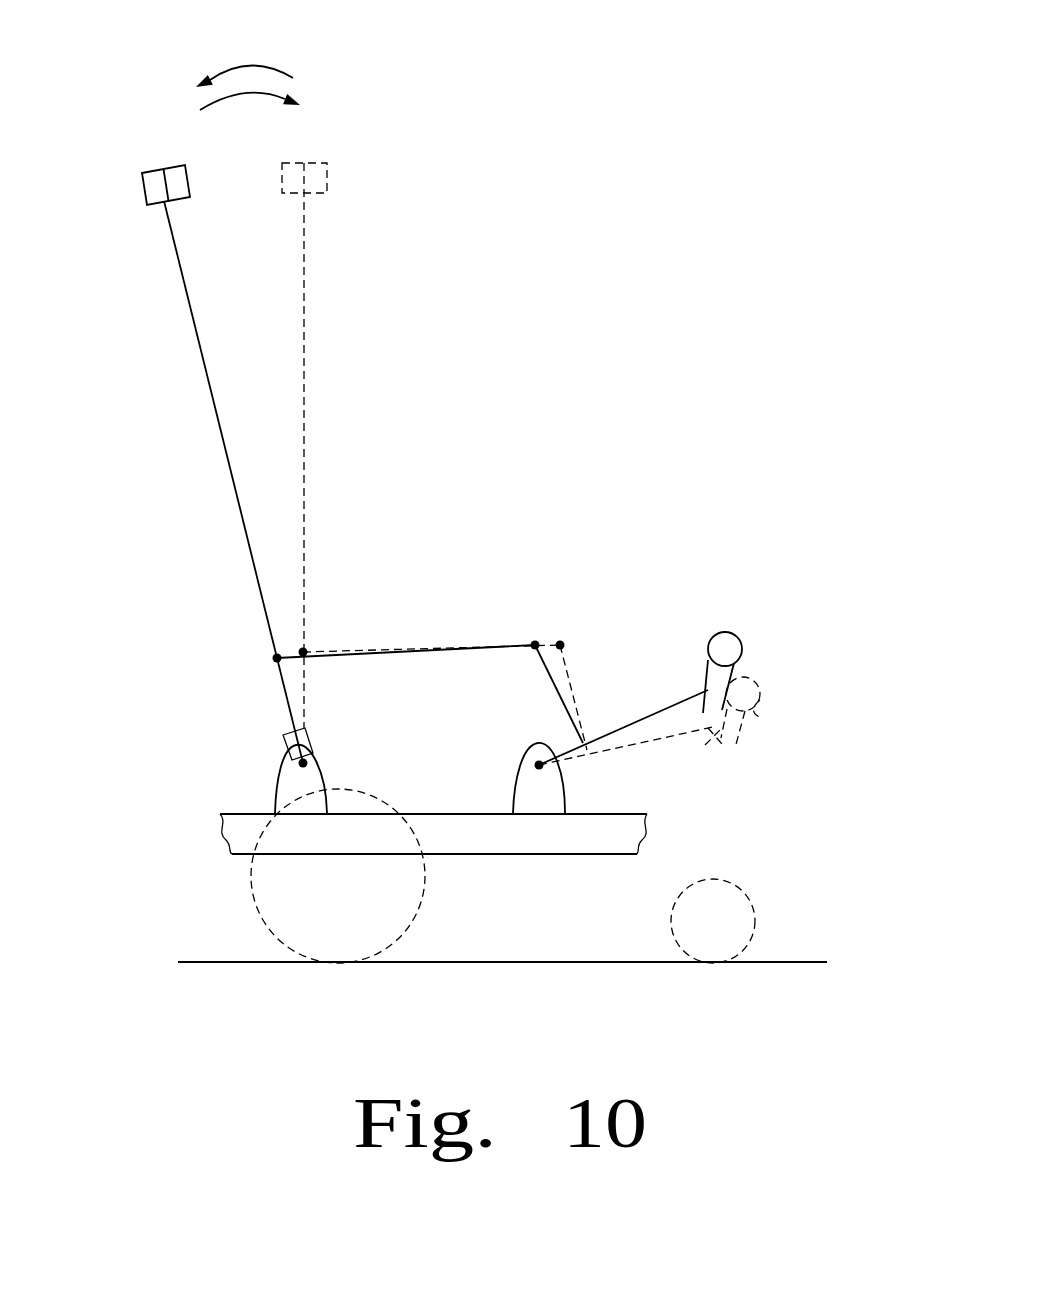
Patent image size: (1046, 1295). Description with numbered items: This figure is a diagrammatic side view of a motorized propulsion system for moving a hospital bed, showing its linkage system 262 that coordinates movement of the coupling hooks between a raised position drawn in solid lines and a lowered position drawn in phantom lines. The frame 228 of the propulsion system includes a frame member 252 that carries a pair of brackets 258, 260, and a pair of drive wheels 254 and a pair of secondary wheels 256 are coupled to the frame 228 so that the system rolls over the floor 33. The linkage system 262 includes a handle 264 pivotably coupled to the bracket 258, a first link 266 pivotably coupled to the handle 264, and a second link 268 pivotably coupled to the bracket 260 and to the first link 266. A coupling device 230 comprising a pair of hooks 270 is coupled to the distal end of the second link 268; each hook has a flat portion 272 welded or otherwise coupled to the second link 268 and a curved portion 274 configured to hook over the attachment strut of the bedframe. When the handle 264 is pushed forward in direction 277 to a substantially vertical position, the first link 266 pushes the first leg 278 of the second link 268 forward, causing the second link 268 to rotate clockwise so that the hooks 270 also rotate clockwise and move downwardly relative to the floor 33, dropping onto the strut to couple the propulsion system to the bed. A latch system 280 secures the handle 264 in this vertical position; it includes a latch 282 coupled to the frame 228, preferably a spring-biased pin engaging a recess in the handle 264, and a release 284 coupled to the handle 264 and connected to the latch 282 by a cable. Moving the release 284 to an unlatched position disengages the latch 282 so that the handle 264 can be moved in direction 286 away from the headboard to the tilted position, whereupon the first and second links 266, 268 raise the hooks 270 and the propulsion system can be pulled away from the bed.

The latch system 280 is at (140, 149).
The release 284 is at (152, 204).
The direction 286 is at (258, 66).
The direction 277 is at (243, 97).
The handle 264 is at (198, 330).
The linkage system 262 is at (513, 583).
The first link 266 is at (372, 647).
The first leg 278 is at (571, 666).
The second link 268 is at (596, 671).
The flat portion 272 is at (706, 672).
The hooks 270 is at (759, 627).
The coupling device 230 is at (797, 633).
The curved portion 274 is at (762, 718).
The latch 282 is at (285, 736).
The bracket 258 is at (315, 777).
The bracket 260 is at (562, 793).
The frame member 252 is at (647, 834).
The drive wheels 254 is at (423, 895).
The secondary wheels 256 is at (757, 910).
The floor 33 is at (543, 962).
The frame 228 is at (193, 869).